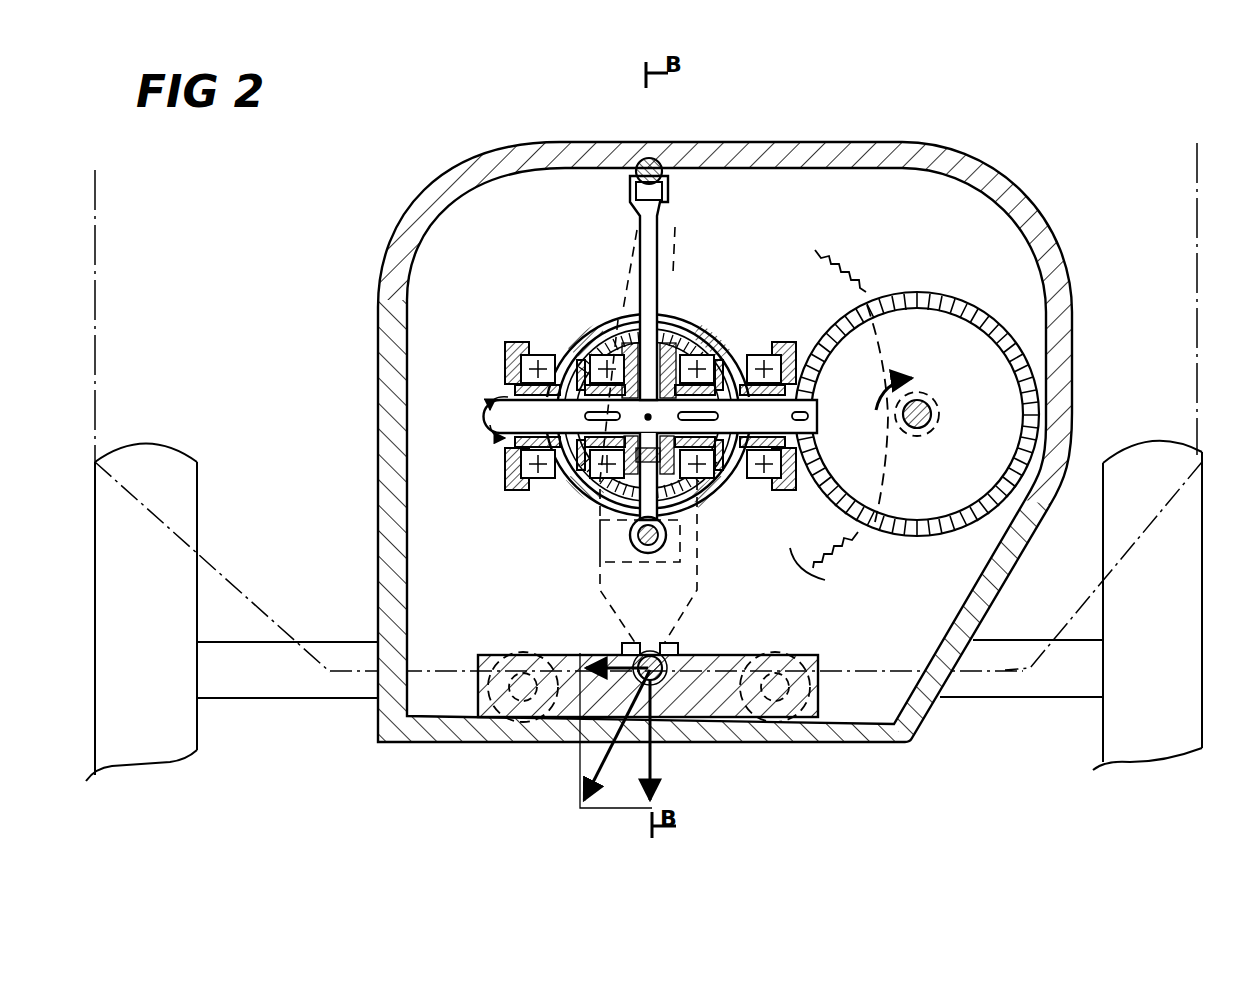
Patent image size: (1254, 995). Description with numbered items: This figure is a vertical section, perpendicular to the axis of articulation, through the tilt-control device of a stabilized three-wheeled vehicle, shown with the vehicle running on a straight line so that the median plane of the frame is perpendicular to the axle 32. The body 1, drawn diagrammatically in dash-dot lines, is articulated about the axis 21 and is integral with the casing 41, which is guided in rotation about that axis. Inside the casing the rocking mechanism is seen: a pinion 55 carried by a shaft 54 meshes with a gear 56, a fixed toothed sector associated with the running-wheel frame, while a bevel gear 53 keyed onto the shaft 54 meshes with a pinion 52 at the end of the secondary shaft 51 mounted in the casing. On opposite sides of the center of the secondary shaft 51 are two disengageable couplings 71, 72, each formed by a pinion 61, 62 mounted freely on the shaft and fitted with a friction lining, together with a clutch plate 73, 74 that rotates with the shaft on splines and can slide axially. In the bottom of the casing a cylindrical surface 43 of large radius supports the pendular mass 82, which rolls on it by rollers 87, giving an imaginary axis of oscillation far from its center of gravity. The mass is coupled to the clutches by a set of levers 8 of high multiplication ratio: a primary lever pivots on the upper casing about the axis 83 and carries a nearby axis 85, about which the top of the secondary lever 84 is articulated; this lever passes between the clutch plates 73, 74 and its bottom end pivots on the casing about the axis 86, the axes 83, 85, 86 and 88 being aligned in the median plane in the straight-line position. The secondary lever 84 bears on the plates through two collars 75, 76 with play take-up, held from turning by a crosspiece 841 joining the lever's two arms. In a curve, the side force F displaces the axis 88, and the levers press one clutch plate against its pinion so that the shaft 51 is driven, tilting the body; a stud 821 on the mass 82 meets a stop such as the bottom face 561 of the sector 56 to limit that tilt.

The body 1 is at (1197, 207).
The axis of articulation 21 is at (652, 296).
The axle 32 is at (1042, 678).
The casing 41 is at (1015, 177).
The cylindrical surface 43 is at (873, 742).
The secondary shaft 51 is at (497, 393).
The pinion 52 is at (940, 297).
The bevel gear 53 is at (968, 305).
The shaft 54 is at (815, 392).
The pinion 55 is at (935, 402).
The gear 56 is at (815, 287).
The bottom face 561 is at (737, 502).
The pinion 61 is at (585, 485).
The pinion 62 is at (715, 495).
The disengageable coupling 71 is at (625, 513).
The disengageable coupling 72 is at (918, 724).
The clutch plate 73 is at (645, 414).
The clutch plate 74 is at (730, 317).
The collar 75 is at (577, 372).
The collar 76 is at (700, 320).
The set of levers 8 is at (672, 240).
The pendular mass 82 is at (700, 687).
The stud 821 is at (675, 646).
The axis 83 is at (642, 160).
The secondary lever 84 is at (636, 350).
The crosspiece 841 is at (630, 545).
The axis of articulation 85 is at (672, 152).
The axis 86 is at (618, 560).
The rollers 87 is at (775, 712).
The axis 88 is at (660, 690).